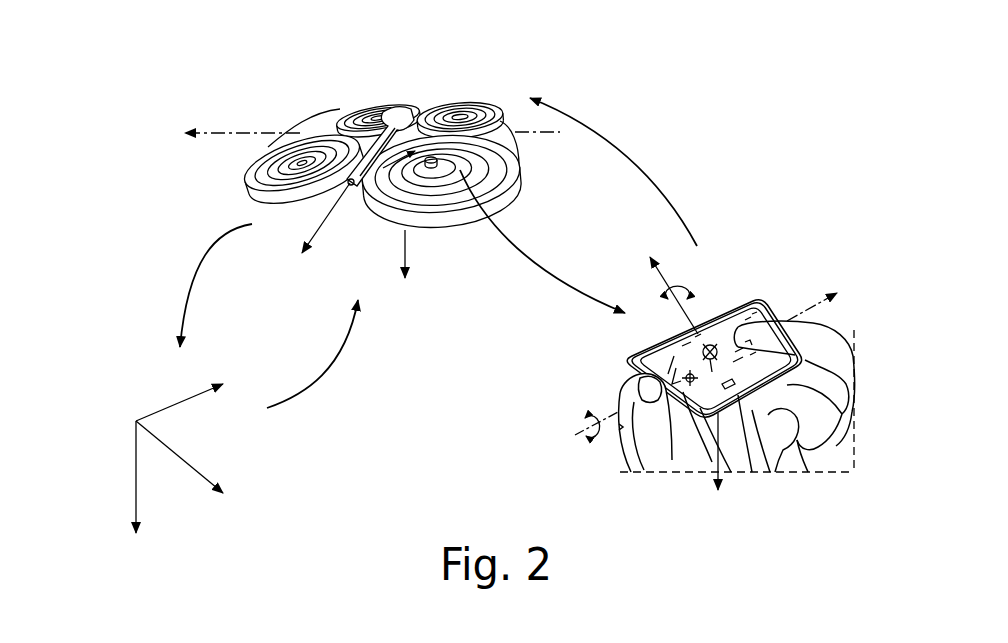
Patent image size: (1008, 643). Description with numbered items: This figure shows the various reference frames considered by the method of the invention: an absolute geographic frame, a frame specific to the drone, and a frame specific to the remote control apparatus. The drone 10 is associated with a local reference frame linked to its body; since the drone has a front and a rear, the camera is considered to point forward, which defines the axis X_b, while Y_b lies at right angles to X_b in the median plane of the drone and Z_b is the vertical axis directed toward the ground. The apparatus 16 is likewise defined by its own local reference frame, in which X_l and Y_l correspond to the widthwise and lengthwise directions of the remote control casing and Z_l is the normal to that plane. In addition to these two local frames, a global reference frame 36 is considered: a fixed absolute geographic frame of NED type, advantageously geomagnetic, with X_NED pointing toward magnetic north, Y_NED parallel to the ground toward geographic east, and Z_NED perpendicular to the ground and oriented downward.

The drone 10 is at (508, 70).
The apparatus 16 is at (788, 245).
The global reference frame 36 is at (107, 378).